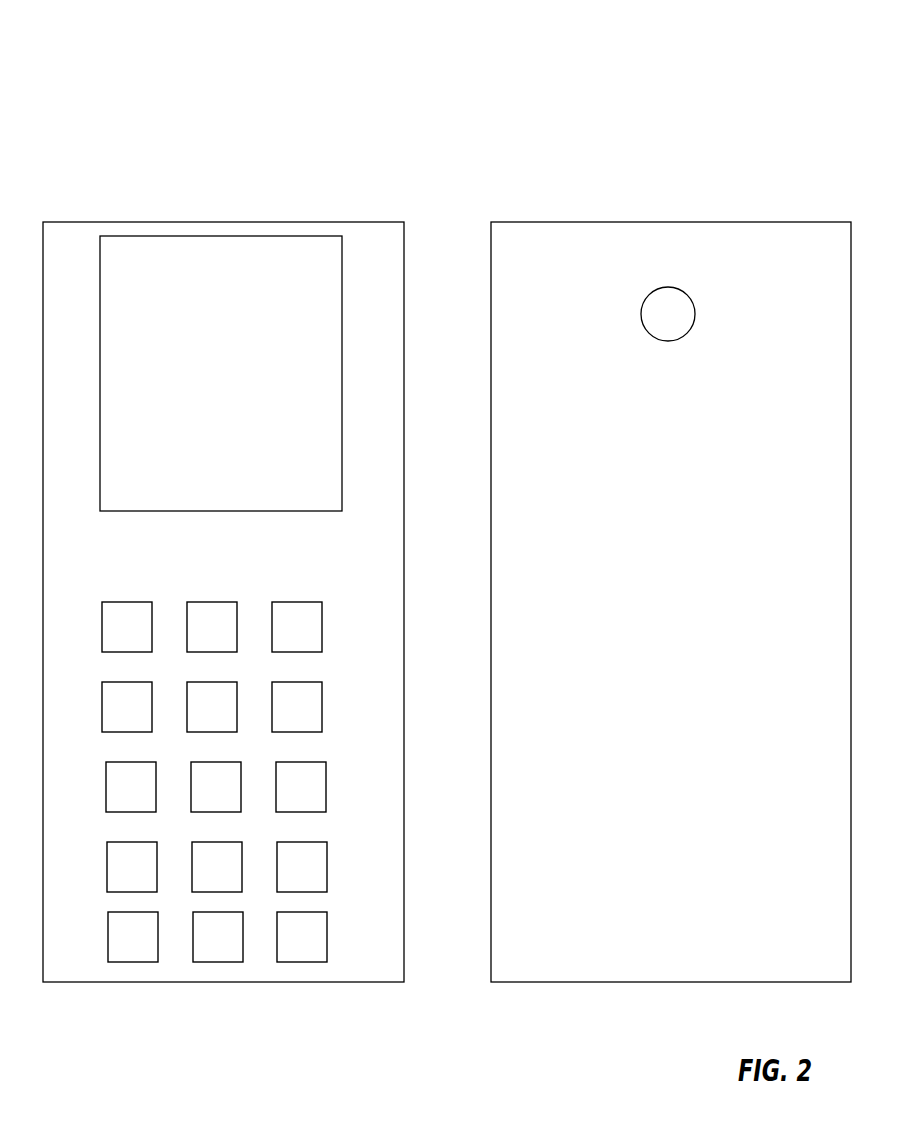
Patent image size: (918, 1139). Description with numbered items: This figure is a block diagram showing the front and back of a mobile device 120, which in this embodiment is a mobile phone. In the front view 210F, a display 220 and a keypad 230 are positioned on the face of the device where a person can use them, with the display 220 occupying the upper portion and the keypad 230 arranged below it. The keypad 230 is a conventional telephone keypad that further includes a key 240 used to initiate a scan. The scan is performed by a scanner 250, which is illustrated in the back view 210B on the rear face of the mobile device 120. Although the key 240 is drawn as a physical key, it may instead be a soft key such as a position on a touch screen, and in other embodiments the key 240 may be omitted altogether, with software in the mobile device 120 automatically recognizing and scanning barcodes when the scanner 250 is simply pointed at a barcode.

The mobile device 120 is at (412, 82).
The front view 210F is at (158, 222).
The back view 210B is at (651, 222).
The display 220 is at (233, 384).
The keypad 230 is at (238, 590).
The key 240 is at (220, 960).
The scanner 250 is at (672, 288).